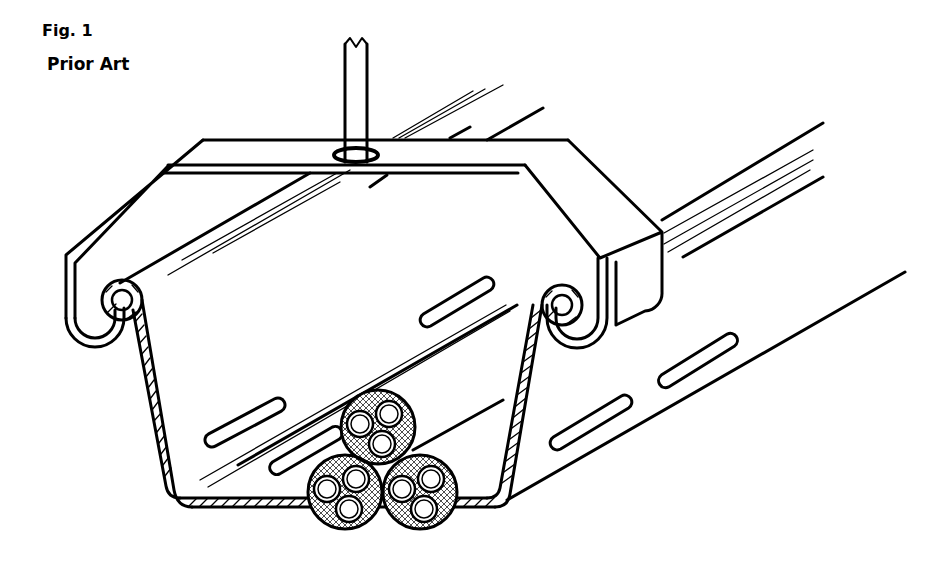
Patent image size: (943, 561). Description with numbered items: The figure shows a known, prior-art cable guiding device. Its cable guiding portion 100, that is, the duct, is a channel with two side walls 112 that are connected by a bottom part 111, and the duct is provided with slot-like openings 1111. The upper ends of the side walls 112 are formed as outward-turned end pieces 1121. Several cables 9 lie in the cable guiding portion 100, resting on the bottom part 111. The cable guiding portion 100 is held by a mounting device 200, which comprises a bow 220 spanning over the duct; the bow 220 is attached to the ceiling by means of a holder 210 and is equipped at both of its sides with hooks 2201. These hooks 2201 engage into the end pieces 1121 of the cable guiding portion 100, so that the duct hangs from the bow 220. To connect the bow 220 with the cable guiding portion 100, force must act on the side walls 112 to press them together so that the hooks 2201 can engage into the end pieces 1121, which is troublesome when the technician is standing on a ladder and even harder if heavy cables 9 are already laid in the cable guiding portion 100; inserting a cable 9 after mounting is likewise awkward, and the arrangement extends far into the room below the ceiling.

The cable guiding portion 100 is at (636, 384).
The bottom part 111 is at (258, 488).
The slot-like openings 1111 is at (312, 450).
The side walls 112 is at (735, 307).
The outward-turned end pieces 1121 is at (723, 212).
The cables 9 is at (468, 453).
The mounting device 200 is at (296, 114).
The holder 210 is at (370, 53).
The bow 220 is at (468, 153).
The hooks 2201 is at (100, 347).